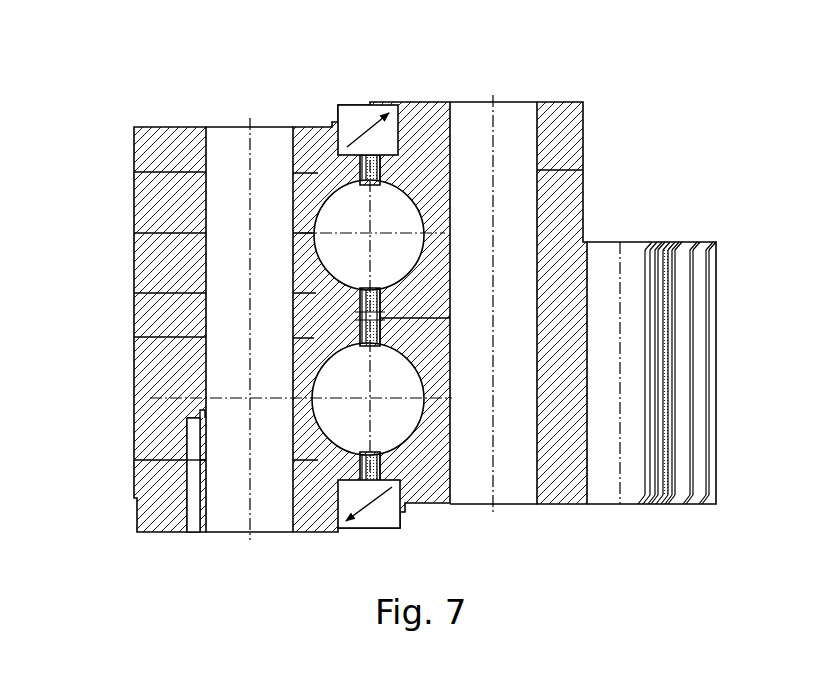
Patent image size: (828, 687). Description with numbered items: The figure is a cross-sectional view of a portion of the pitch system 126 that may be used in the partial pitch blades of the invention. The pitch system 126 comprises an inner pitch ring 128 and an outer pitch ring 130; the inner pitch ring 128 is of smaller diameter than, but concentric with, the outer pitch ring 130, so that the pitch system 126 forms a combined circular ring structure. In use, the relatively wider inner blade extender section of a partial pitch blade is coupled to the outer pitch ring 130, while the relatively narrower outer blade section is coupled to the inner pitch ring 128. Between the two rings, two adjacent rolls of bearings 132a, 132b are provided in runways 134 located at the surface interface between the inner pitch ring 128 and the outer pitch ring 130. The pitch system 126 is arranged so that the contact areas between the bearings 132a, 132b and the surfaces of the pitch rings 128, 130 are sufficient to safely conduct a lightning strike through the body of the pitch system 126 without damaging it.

The pitch system 126 is at (161, 84).
The inner pitch ring 128 is at (136, 274).
The outer pitch ring 130 is at (588, 134).
The first roll of bearings 132a is at (345, 183).
The second roll of bearings 132b is at (428, 506).
The runways 134 is at (292, 187).